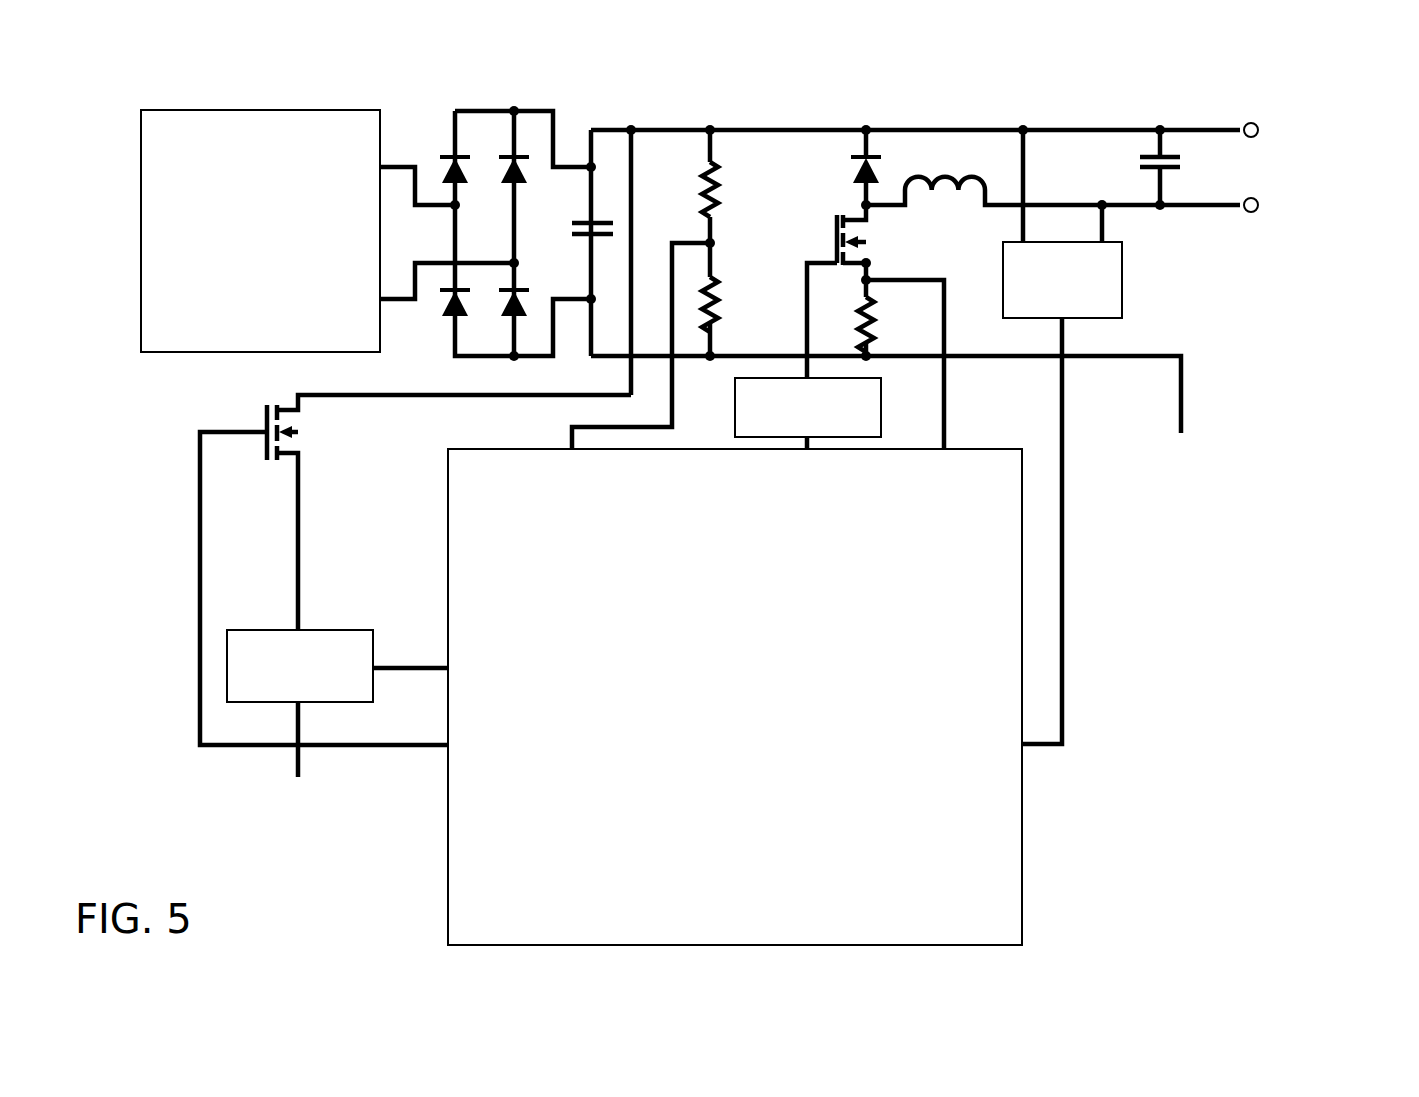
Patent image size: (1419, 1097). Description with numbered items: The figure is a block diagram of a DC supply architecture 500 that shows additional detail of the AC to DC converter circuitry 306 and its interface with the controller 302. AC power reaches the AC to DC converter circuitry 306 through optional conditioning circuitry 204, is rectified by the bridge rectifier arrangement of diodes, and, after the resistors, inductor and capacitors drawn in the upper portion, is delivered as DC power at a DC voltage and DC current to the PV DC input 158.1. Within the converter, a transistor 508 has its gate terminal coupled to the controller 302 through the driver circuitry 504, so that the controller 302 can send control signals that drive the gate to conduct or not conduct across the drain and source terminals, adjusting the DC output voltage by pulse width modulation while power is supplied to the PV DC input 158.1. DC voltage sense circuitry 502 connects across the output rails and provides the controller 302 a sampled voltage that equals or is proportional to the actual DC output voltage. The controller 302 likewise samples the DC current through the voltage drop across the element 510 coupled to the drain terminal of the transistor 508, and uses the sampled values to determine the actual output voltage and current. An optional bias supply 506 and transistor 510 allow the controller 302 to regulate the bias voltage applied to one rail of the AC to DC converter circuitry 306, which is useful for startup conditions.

The architecture 500 is at (63, 76).
The AC to DC converter circuitry 306 is at (1217, 117).
The conditioning circuitry 204 is at (243, 256).
The PV DC input 158.1 is at (1306, 167).
The transistor 508 is at (825, 243).
The transistor 510 is at (572, 512).
The DC voltage sense circuitry 502 is at (1046, 318).
The driver circuitry 504 is at (791, 434).
The bias supply 506 is at (283, 689).
The controller 302 is at (718, 721).